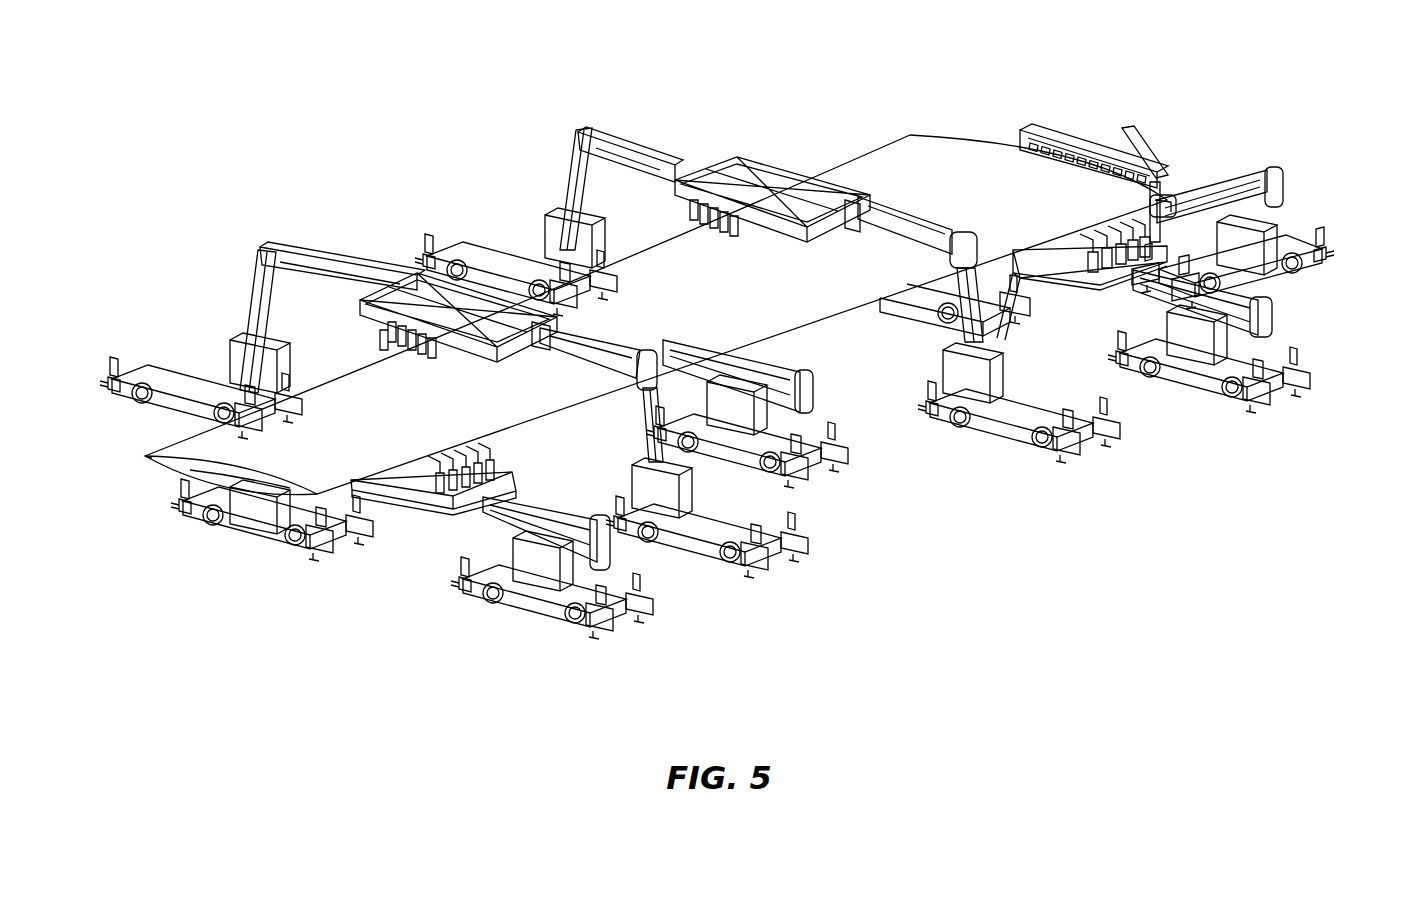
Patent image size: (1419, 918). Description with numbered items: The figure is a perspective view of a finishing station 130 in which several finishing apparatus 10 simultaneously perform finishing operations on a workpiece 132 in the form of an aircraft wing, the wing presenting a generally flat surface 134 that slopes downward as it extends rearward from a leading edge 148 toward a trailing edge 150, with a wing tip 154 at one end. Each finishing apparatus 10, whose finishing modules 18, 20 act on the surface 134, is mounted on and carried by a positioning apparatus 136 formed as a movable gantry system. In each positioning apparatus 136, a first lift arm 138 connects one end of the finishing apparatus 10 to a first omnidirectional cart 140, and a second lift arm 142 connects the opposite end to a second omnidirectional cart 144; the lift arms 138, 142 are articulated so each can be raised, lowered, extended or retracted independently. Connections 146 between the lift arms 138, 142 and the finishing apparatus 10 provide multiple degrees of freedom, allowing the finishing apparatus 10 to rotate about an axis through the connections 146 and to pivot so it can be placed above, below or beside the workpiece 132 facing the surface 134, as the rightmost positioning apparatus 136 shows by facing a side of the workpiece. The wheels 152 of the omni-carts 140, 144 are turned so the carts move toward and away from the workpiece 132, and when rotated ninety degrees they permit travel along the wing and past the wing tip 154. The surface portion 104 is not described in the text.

The finishing apparatus 10 is at (1012, 118).
The finishing module 18 is at (867, 353).
The finishing module 20 is at (1192, 222).
The surface of structure 104 is at (530, 293).
The finishing station 130 is at (190, 265).
The workpiece 132 is at (900, 127).
The surface 134 is at (250, 458).
The positioning apparatus 136 is at (1236, 159).
The first lift arm 138 is at (280, 265).
The first omnidirectional cart 140 is at (160, 363).
The second lift arm 142 is at (1257, 170).
The second omnidirectional cart 144 is at (1257, 258).
The connections 146 is at (373, 283).
The leading edge 148 is at (292, 547).
The trailing edge 150 is at (178, 443).
The wheels 152 is at (140, 395).
The wing tip 154 is at (260, 482).